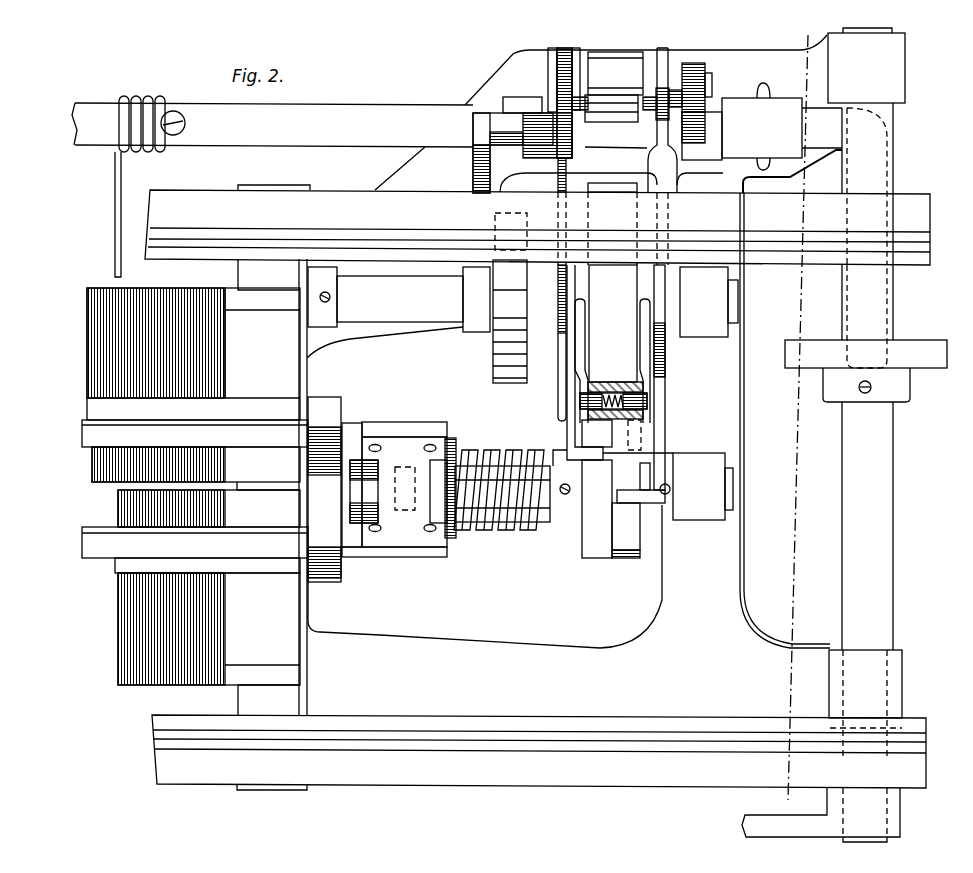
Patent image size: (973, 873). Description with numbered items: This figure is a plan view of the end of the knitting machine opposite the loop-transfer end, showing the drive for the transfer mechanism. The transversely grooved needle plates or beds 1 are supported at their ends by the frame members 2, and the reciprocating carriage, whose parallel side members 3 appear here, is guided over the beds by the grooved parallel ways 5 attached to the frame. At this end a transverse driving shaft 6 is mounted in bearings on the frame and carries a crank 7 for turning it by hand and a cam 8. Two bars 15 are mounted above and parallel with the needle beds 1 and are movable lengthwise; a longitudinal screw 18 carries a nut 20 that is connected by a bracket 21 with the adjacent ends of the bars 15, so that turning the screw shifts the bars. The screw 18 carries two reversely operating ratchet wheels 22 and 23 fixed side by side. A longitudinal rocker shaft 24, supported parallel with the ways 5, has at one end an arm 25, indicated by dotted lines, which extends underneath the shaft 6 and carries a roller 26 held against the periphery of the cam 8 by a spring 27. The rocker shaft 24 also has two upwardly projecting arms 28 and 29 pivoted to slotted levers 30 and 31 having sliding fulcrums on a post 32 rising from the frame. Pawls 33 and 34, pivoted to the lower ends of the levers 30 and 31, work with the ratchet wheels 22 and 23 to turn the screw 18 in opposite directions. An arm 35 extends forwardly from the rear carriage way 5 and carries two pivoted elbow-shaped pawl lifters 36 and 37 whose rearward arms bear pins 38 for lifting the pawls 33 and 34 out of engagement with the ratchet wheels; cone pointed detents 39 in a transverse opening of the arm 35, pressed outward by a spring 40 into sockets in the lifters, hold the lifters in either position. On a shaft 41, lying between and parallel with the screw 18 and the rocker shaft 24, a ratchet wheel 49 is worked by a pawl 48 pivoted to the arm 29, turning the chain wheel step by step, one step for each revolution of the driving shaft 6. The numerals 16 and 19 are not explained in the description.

The needle plates or beds 1 is at (193, 486).
The frame members 2 is at (272, 487).
The carriage side members 3 is at (806, 38).
The grooved parallel ways 5 is at (537, 487).
The driving shaft 6 is at (853, 394).
The crank 7 is at (821, 815).
The cam 8 is at (918, 362).
The bars 15 is at (195, 489).
The armature block 16 is at (324, 489).
The longitudinal screw 18 is at (511, 531).
The bearing block 19 is at (733, 492).
The nut 20 is at (456, 442).
The bracket 21 is at (398, 497).
The ratchet wheel 22 is at (628, 559).
The ratchet wheel 23 is at (598, 559).
The rocker shaft 24 is at (359, 125).
The arm 25 is at (887, 300).
The roller 26 is at (895, 352).
The spring 27 is at (115, 184).
The arm 28 is at (705, 60).
The arm 29 is at (532, 112).
The slotted lever 30 is at (663, 48).
The slotted lever 31 is at (565, 47).
The post 32 is at (621, 87).
The pawl 33 is at (630, 504).
The pawl 34 is at (596, 461).
The arm 35 is at (612, 282).
The pawl lifter 36 is at (665, 370).
The pawl lifter 37 is at (575, 383).
The pins 38 is at (558, 312).
The cone pointed detents 39 is at (628, 382).
The spring 40 is at (611, 435).
The shaft 41 is at (753, 297).
The pawl 48 is at (478, 341).
The ratchet wheel 49 is at (493, 373).